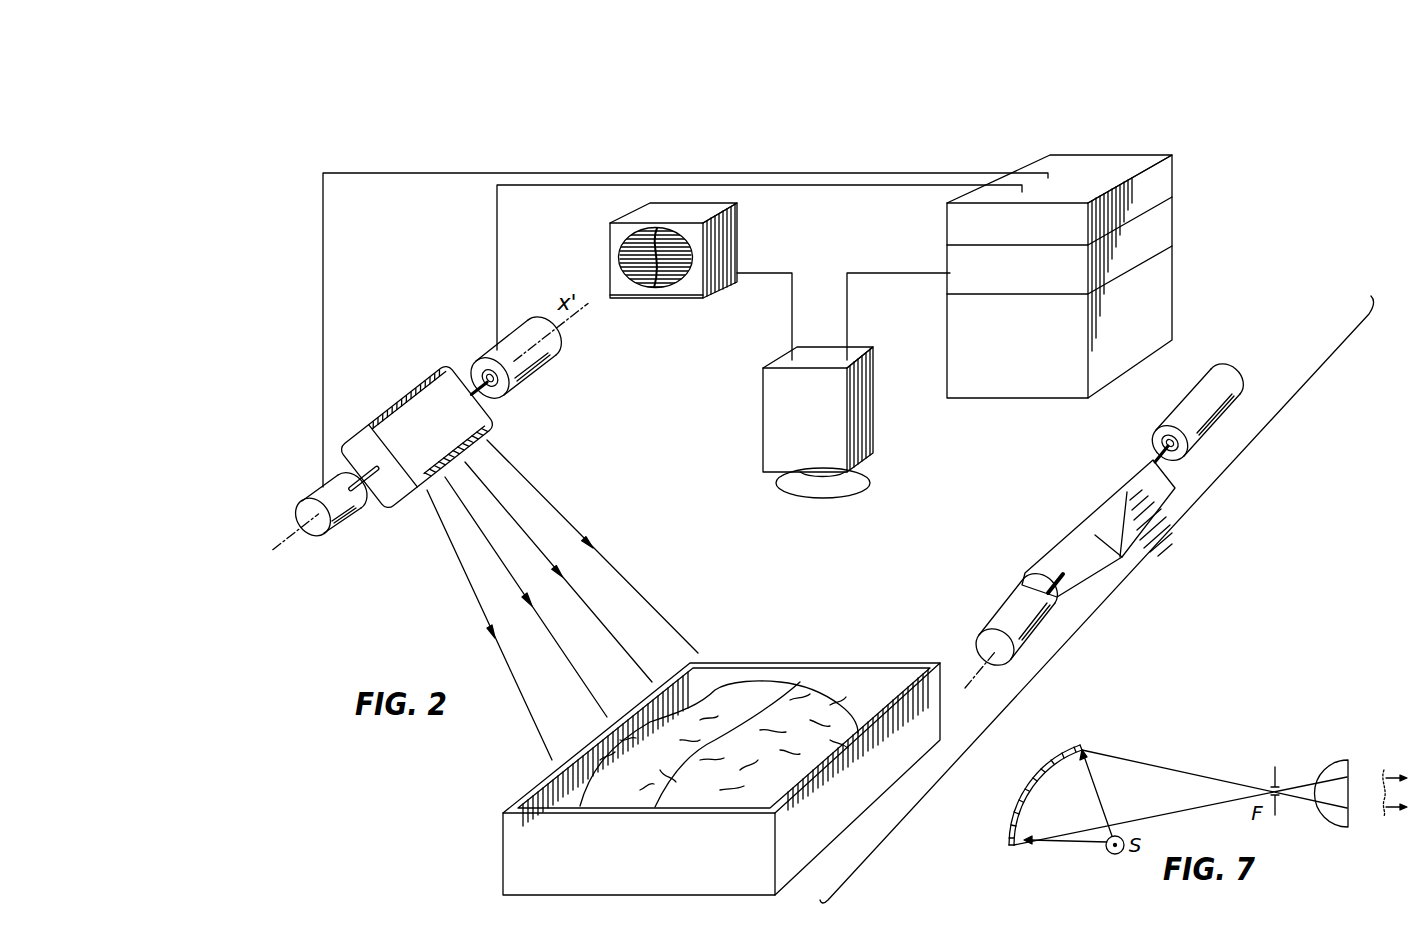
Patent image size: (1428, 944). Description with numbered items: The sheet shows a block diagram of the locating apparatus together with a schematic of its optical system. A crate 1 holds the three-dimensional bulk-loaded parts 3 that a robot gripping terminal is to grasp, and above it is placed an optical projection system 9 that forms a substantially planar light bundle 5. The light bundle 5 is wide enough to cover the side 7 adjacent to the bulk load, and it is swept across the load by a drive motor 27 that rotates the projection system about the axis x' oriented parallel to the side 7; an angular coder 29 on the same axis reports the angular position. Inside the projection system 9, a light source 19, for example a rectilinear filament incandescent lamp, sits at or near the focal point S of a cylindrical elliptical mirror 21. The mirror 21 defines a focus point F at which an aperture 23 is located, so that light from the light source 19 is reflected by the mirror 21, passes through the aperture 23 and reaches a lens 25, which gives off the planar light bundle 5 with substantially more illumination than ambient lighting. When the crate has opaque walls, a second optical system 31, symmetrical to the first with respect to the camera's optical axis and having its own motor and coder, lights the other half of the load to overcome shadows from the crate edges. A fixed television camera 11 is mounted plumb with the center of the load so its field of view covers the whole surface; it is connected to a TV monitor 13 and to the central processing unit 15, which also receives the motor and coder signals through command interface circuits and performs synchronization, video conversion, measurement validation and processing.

In FIG. 2, the crate 1 is at (927, 733).
In FIG. 2, the bulk-loaded parts 3 is at (800, 683).
In FIG. 2, the planar light bundle 5 is at (605, 624).
In FIG. 7, the planar light bundle 5 is at (1388, 778).
In FIG. 2, the side 7 is at (517, 807).
In FIG. 2, the optical projection system 9 is at (418, 385).
In FIG. 7, the optical projection system 9 is at (1176, 747).
In FIG. 2, the television camera 11 is at (763, 447).
In FIG. 2, the TV monitor 13 is at (688, 287).
In FIG. 2, the central processing unit 15 is at (1008, 390).
In FIG. 7, the light source 19 is at (1105, 853).
In FIG. 7, the cylindrical elliptical mirror 21 is at (1043, 770).
In FIG. 7, the aperture 23 is at (1270, 790).
In FIG. 7, the lens 25 is at (1358, 762).
In FIG. 2, the drive motor 27 is at (545, 363).
In FIG. 2, the angular coder 29 is at (348, 522).
In FIG. 2, the second optical system 31 is at (1078, 517).